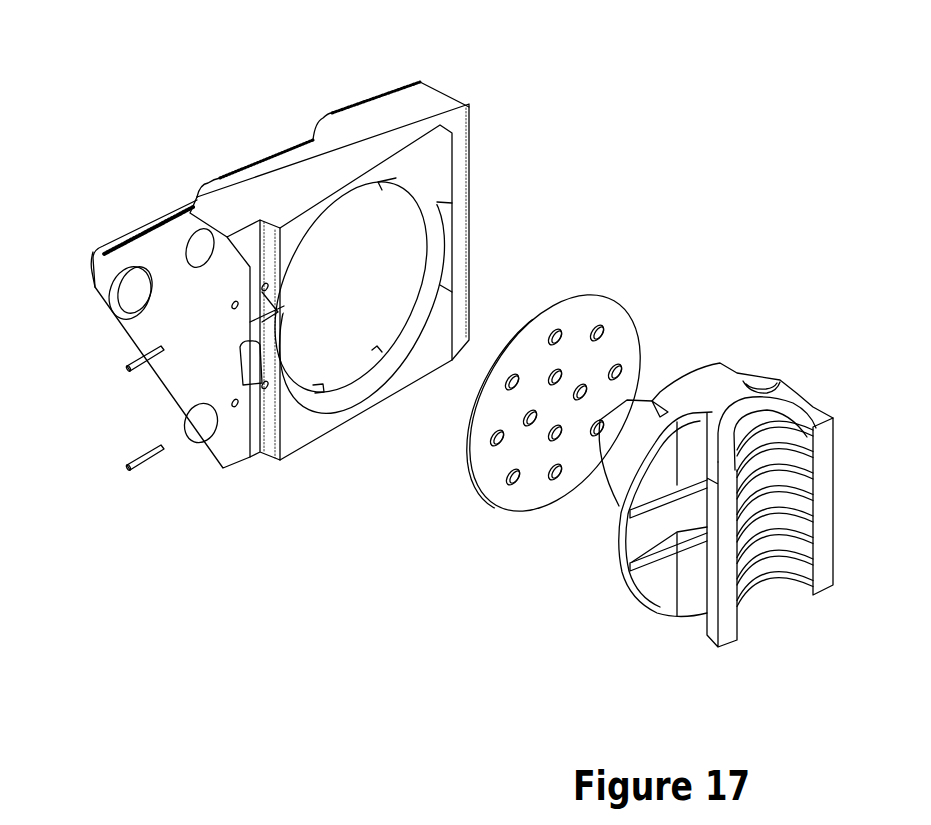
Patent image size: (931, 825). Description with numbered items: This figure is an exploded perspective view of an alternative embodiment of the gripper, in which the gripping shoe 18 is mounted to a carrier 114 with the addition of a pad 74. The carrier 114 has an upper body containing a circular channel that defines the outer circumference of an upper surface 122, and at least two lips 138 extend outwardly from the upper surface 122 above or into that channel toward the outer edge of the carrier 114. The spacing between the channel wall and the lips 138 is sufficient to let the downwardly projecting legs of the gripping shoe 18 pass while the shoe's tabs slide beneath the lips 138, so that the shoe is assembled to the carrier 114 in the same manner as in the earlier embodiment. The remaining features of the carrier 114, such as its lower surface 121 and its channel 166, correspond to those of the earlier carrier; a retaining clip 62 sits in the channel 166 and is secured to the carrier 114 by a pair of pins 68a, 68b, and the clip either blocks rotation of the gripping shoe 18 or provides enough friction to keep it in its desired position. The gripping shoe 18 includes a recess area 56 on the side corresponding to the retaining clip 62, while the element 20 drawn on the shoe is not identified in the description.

The gripping shoe 18 is at (655, 590).
The ribs 20 is at (777, 573).
The recess area 56 is at (630, 565).
The retaining clip 62 is at (267, 358).
The pin 68a is at (125, 367).
The pin 68b is at (128, 467).
The pad 74 is at (506, 513).
The carrier 114 is at (177, 380).
The lower surface 121 is at (323, 117).
The upper surface 122 is at (390, 258).
The lips 138 is at (353, 377).
The channel 166 is at (197, 197).